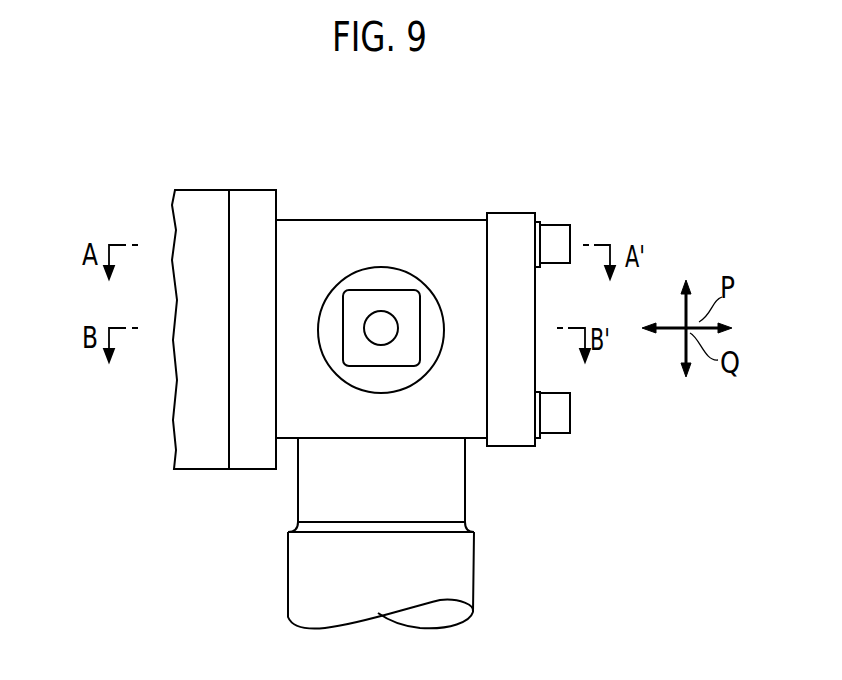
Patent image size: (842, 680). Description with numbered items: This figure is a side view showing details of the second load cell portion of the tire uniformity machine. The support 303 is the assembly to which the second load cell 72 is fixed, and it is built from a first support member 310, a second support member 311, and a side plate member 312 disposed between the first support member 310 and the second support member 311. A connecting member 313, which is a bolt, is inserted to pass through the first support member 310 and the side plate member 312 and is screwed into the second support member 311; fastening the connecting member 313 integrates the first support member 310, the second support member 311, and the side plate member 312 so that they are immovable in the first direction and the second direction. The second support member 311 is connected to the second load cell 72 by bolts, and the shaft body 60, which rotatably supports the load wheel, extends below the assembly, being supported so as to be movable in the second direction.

The second load cell 72 is at (203, 205).
The second support member 311 is at (252, 455).
The side plate member 312 is at (442, 238).
The first support member 310 is at (505, 438).
The support 303 is at (523, 438).
The connecting member 313 is at (563, 233).
The shaft body 60 is at (298, 560).